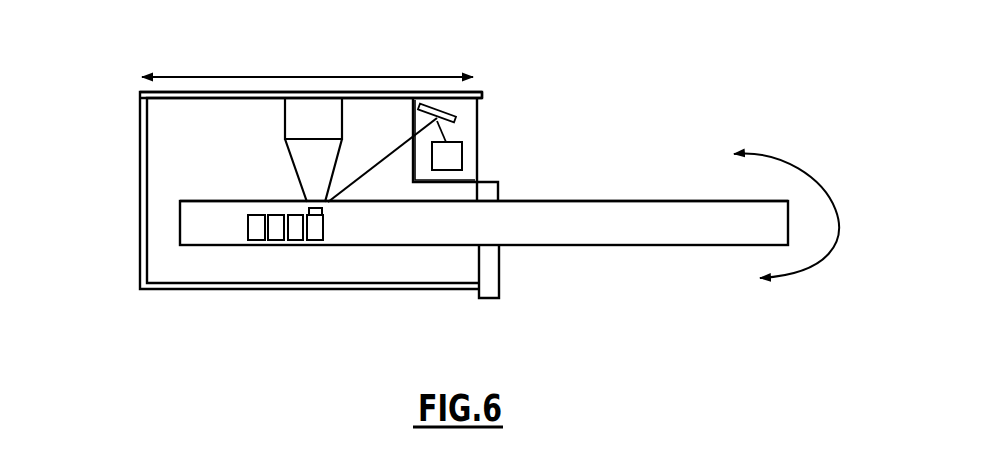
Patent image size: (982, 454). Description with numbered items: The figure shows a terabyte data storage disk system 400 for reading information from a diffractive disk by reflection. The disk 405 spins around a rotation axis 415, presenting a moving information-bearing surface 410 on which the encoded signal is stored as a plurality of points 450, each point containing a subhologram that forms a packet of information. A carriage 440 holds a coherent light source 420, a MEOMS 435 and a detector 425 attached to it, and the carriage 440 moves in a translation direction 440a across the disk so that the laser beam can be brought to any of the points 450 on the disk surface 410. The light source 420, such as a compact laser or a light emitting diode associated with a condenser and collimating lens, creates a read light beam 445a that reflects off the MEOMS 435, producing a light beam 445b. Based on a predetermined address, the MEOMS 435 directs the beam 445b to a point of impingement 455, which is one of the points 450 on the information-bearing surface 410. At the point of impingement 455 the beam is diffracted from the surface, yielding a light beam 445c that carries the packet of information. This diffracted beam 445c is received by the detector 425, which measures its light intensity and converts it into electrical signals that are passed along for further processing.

The terabyte data storage disk system 400 is at (153, 354).
The disk 405 is at (592, 230).
The information-bearing surface 410 is at (604, 201).
The rotation axis 415 is at (502, 184).
The coherent light source 420 is at (464, 153).
The detector 425 is at (312, 91).
The MEOMS 435 is at (438, 110).
The carriage 440 is at (140, 253).
The translation direction 440a is at (174, 77).
The light beam 445a is at (447, 130).
The light beam 445b is at (372, 170).
The light beam 445c is at (285, 127).
The points 450 is at (242, 234).
The point of impingement 455 is at (327, 205).